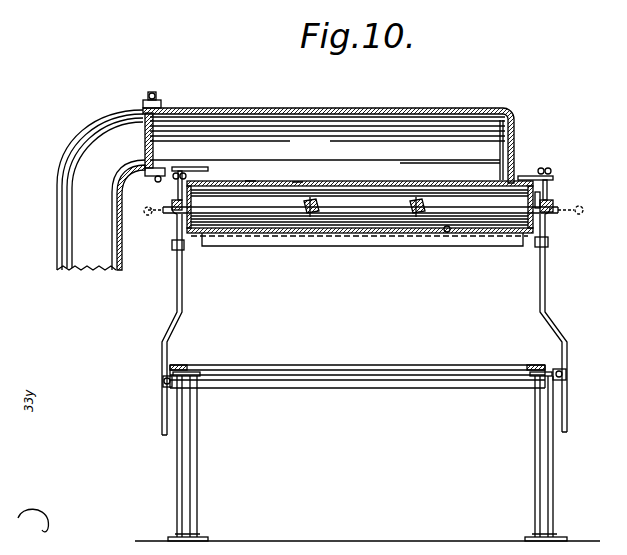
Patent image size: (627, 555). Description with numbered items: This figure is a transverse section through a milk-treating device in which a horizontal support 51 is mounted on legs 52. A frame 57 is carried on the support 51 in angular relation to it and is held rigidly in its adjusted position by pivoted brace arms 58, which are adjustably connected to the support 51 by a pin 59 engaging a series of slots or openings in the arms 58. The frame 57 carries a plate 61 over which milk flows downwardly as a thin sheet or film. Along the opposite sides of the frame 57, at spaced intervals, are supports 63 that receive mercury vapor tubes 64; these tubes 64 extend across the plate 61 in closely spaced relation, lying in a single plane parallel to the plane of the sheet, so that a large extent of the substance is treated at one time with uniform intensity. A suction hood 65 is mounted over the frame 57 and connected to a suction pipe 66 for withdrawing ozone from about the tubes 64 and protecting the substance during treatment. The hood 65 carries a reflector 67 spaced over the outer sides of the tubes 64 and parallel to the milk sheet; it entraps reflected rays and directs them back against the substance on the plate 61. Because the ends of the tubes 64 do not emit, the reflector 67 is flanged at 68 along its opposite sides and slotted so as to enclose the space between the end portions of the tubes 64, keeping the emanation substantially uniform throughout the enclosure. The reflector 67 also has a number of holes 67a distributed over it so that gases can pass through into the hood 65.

The horizontal support 51 is at (255, 366).
The legs 52 is at (190, 471).
The frame 57 is at (382, 233).
The pivoted brace arms 58 is at (183, 288).
The pin 59 is at (162, 381).
The plate 61 is at (446, 234).
The supports 63 is at (316, 204).
The mercury vapor tubes 64 is at (352, 213).
The suction hood 65 is at (390, 101).
The suction pipe 66 is at (119, 250).
The reflector 67 is at (378, 182).
The holes 67a is at (297, 183).
The flange 68 is at (522, 200).